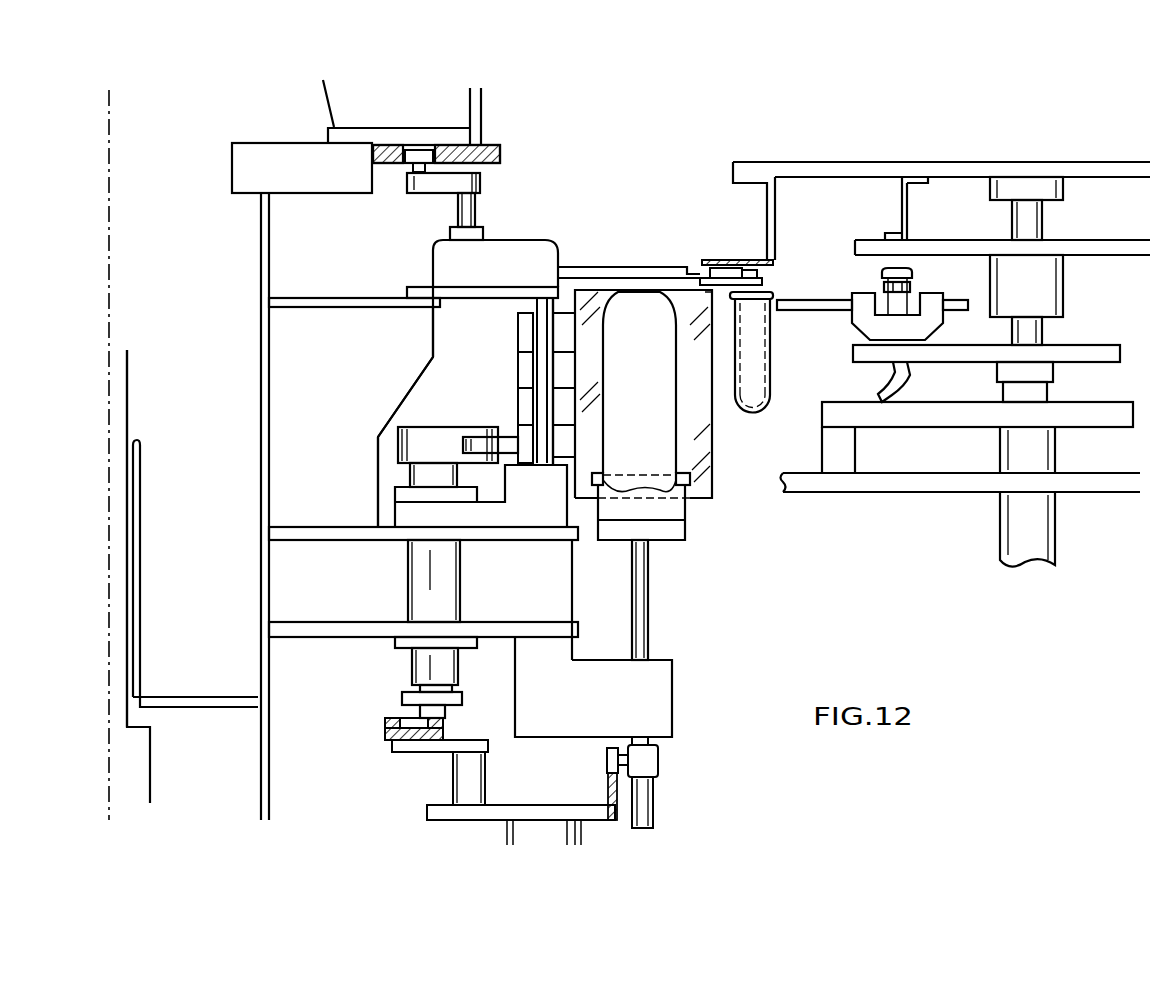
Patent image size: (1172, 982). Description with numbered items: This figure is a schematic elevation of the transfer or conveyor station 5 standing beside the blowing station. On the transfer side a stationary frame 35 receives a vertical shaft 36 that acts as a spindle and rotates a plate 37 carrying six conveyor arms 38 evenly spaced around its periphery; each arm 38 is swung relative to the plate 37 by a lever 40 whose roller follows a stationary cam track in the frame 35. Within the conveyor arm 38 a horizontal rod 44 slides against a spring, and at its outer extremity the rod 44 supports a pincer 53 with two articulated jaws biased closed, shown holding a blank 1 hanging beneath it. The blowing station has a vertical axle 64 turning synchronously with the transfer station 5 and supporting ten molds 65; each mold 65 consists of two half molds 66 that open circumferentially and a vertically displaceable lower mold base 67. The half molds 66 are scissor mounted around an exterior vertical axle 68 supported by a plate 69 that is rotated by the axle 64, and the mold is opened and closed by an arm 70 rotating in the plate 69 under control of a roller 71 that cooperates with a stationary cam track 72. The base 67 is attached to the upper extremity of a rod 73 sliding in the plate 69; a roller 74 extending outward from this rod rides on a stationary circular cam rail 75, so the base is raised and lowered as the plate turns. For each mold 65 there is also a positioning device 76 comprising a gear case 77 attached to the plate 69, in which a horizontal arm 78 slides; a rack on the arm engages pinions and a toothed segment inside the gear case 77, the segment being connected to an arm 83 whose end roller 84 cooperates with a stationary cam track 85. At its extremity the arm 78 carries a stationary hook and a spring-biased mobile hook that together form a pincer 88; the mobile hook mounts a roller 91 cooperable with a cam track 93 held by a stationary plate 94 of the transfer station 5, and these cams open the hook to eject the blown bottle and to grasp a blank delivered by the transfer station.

The test tube 1 is at (762, 372).
The transfer apparatus 5 is at (990, 497).
The stationary frame 35 is at (975, 410).
The vertical shaft 36 is at (1040, 452).
The plate 37 is at (975, 357).
The conveyor arm 38 is at (922, 288).
The lever 40 is at (886, 385).
The horizontal rod 44 is at (819, 306).
The pincer 53 is at (779, 291).
The vertical axle 64 is at (120, 622).
The mold 65 is at (719, 469).
The half mold 66 is at (641, 395).
The lower mold base 67 is at (668, 510).
The exterior vertical axle 68 is at (543, 323).
The plate 69 is at (500, 535).
The arm 70 is at (431, 440).
The roller 71 is at (400, 718).
The stationary cam track 72 is at (382, 728).
The rod 73 is at (645, 627).
The roller 74 is at (607, 758).
The stationary circular cam rail 75 is at (609, 787).
The positioning device 76 is at (423, 248).
The gear case 77 is at (540, 250).
The horizontal arm 78 is at (625, 268).
The arm 83 is at (480, 178).
The bolt 84 is at (422, 150).
The stationary cam track 85 is at (391, 165).
The pincer 88 is at (720, 292).
The roller 91 is at (700, 262).
The cam track 93 is at (725, 265).
The stationary plate 94 is at (850, 170).